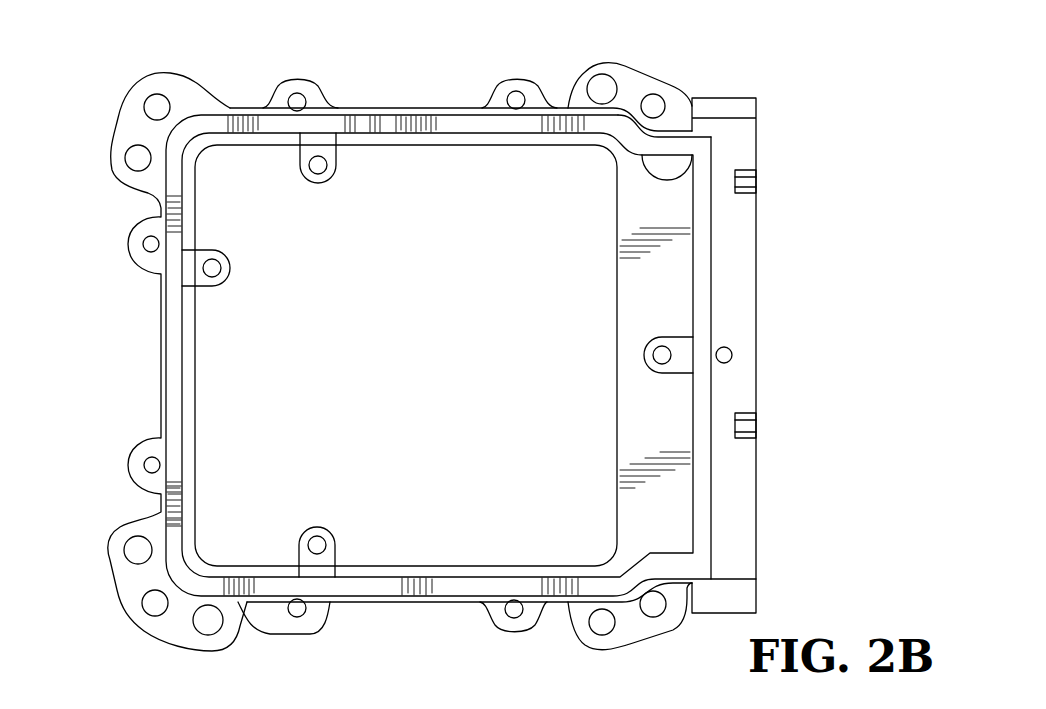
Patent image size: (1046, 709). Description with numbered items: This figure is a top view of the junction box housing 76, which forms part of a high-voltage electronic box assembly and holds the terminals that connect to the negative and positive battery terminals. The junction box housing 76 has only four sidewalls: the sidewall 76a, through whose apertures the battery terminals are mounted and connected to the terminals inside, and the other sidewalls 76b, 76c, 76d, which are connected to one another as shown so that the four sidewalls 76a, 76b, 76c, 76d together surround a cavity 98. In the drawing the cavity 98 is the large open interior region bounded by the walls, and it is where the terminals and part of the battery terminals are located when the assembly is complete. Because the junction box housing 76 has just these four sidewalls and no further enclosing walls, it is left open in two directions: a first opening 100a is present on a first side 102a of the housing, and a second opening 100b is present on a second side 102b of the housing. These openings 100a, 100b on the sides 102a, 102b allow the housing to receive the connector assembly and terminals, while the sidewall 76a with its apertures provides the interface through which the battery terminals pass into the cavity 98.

The junction box housing 76 is at (450, 346).
The sidewall 76a is at (742, 253).
The sidewall 76b is at (445, 123).
The sidewall 76c is at (167, 390).
The sidewall 76d is at (374, 588).
The cavity 98 is at (583, 180).
The first opening 100a is at (217, 495).
The second opening 100b is at (358, 132).
The first side 102a is at (228, 532).
The second side 102b is at (377, 130).